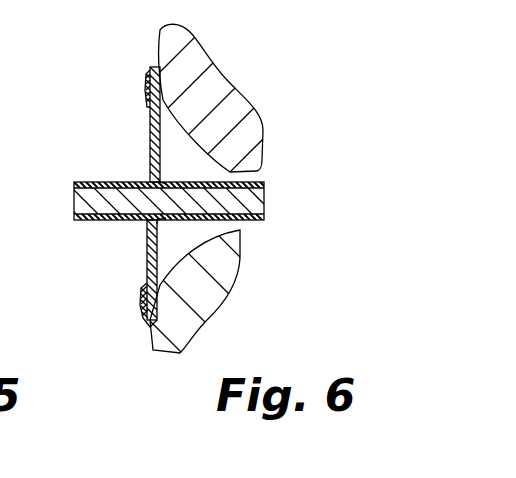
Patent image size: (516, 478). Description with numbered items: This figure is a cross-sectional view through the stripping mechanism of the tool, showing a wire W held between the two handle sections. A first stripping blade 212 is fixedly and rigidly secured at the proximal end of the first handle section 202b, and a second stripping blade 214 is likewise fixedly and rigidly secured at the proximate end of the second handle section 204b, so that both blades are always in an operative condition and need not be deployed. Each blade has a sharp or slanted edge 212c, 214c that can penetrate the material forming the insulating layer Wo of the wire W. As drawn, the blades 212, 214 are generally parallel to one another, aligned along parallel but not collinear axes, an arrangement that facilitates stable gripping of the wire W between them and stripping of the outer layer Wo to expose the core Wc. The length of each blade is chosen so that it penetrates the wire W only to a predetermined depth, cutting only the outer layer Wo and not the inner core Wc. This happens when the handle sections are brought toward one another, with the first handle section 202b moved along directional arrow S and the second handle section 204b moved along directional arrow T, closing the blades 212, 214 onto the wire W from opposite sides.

The second handle section 204b is at (232, 100).
The first handle section 202b is at (205, 289).
The first stripping blade 212 is at (150, 125).
The sharp or slanted edge 212c is at (158, 186).
The second stripping blade 214 is at (147, 272).
The sharp or slanted edge 214c is at (165, 219).
The wire W is at (90, 162).
The core Wc is at (93, 203).
The insulating layer Wo is at (97, 223).
The directional arrow S is at (135, 132).
The directional arrow T is at (136, 231).